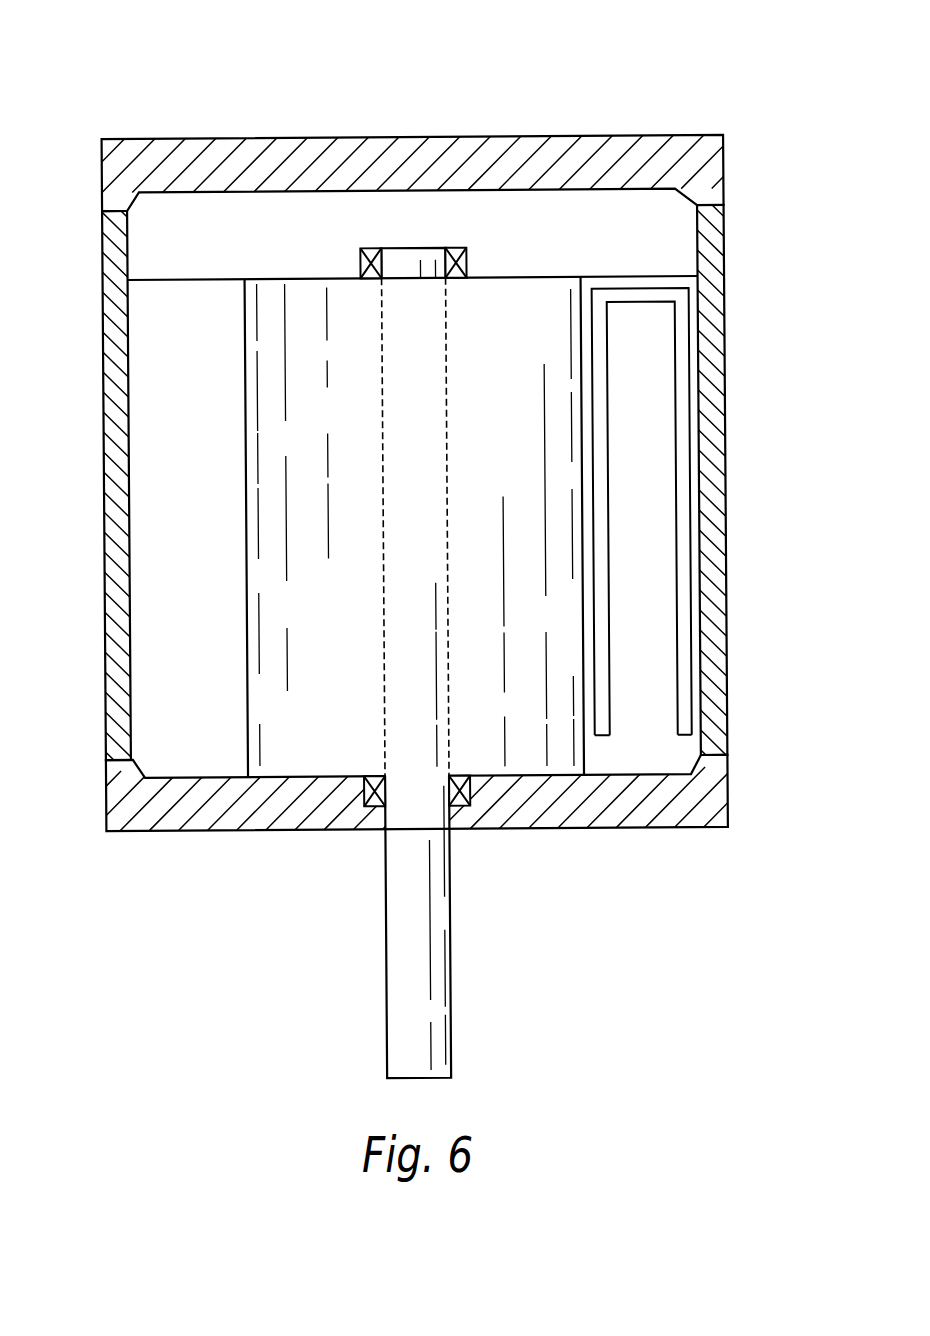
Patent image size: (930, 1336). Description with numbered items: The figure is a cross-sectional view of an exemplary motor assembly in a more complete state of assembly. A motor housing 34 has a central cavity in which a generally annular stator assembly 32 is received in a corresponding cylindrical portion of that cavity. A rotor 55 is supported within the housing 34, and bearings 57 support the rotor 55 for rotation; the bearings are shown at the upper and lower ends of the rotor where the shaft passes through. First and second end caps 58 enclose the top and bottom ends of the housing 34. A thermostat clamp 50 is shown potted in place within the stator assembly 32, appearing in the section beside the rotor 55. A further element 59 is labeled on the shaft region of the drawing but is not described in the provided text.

The end caps 58 is at (230, 138).
The shaft 59 is at (398, 237).
The bearings 57 is at (467, 260).
The motor housing 34 is at (717, 340).
The thermostat clamp 50 is at (683, 530).
The rotor 55 is at (327, 644).
The stator assembly 32 is at (637, 755).